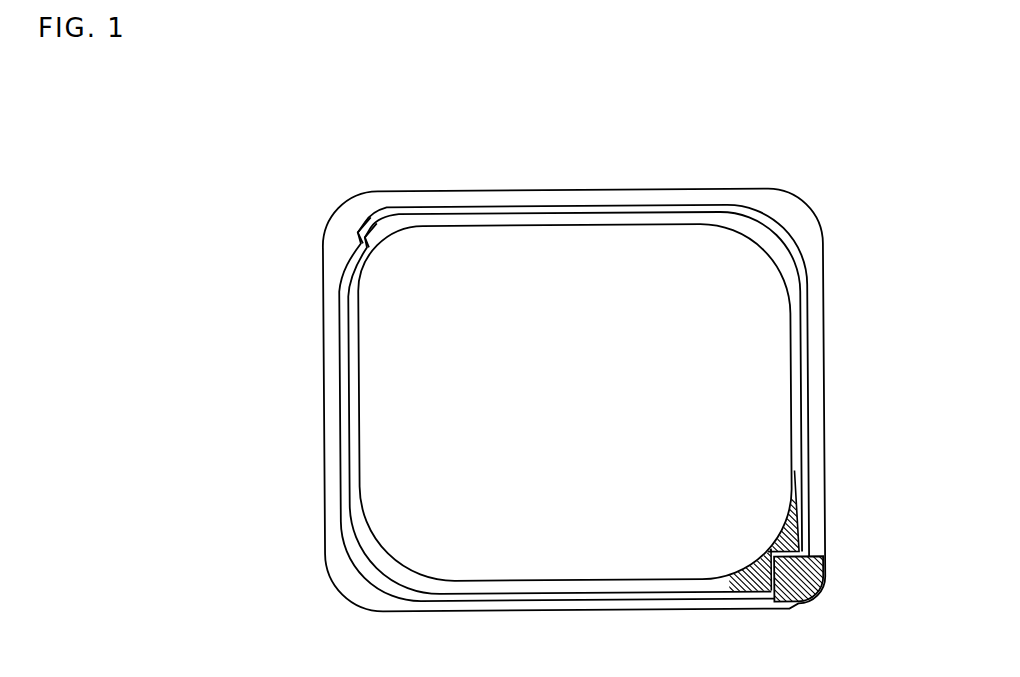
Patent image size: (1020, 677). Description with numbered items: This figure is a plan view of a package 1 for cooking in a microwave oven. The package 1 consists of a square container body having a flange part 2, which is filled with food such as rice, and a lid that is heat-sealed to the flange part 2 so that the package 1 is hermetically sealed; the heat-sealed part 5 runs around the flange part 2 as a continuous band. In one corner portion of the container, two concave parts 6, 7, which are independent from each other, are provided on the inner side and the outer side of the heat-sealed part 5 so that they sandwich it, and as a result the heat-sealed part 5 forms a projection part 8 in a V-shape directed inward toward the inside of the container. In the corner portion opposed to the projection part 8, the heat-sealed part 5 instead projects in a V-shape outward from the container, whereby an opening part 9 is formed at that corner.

The package 1 is at (526, 118).
The flange part 2 is at (374, 204).
The heat-sealed part 5 is at (580, 212).
The concave part 6 is at (801, 525).
The concave part 7 is at (808, 584).
The projection part 8 is at (772, 548).
The opening part 9 is at (361, 237).